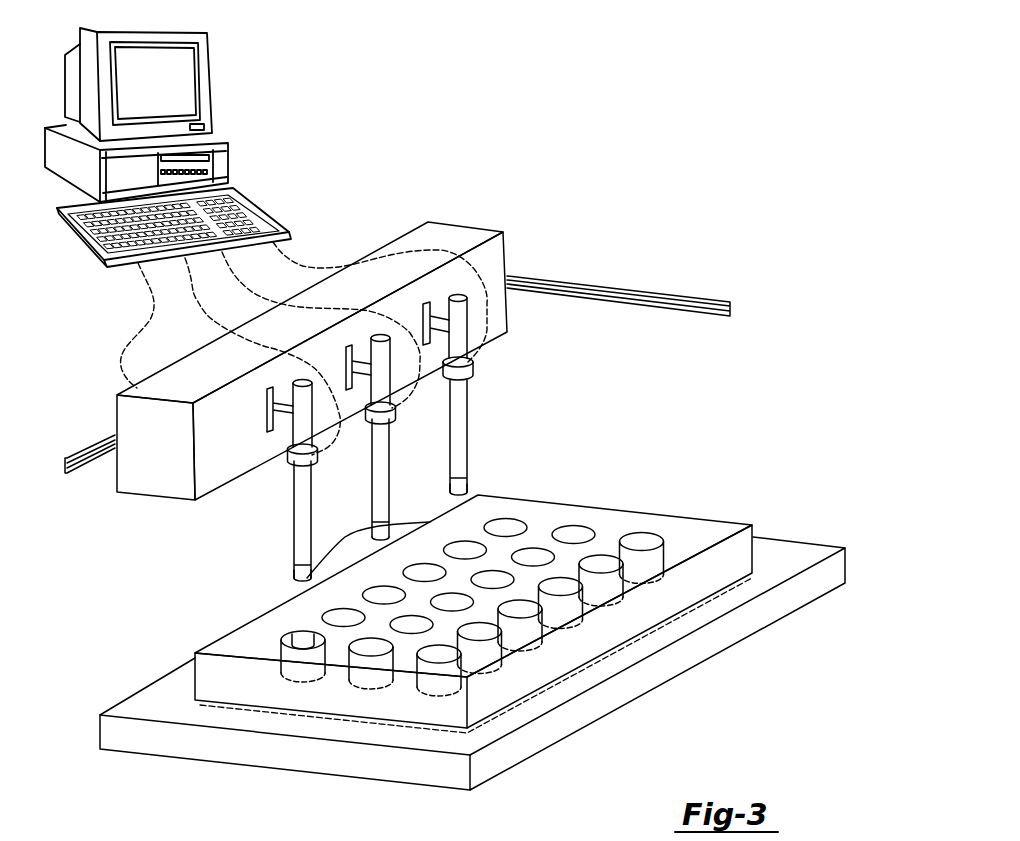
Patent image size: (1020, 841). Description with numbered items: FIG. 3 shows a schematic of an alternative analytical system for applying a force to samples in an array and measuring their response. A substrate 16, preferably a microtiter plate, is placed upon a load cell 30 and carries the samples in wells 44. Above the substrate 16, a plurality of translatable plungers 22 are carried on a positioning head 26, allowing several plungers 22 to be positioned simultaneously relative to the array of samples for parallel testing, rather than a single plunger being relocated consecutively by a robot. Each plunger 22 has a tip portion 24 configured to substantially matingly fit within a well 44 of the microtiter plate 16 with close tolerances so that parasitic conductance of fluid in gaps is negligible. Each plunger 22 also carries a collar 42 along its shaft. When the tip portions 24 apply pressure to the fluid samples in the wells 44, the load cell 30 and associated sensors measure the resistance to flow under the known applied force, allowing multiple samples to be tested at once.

The substrate 16 is at (682, 513).
The plunger 22 is at (314, 500).
The tip portion 24 is at (304, 577).
The positioning beam head 26 is at (447, 235).
The load cell 30 is at (798, 538).
The collar 42 is at (291, 459).
The well 44 is at (277, 650).